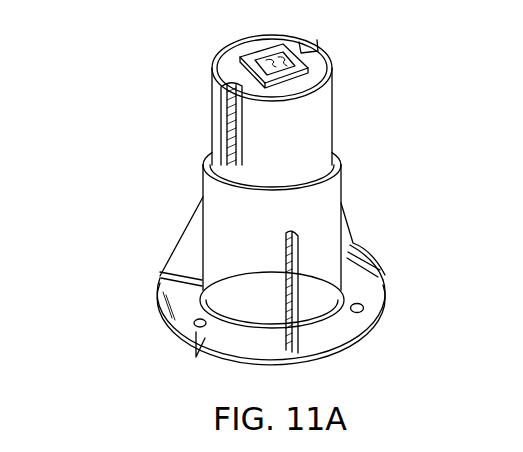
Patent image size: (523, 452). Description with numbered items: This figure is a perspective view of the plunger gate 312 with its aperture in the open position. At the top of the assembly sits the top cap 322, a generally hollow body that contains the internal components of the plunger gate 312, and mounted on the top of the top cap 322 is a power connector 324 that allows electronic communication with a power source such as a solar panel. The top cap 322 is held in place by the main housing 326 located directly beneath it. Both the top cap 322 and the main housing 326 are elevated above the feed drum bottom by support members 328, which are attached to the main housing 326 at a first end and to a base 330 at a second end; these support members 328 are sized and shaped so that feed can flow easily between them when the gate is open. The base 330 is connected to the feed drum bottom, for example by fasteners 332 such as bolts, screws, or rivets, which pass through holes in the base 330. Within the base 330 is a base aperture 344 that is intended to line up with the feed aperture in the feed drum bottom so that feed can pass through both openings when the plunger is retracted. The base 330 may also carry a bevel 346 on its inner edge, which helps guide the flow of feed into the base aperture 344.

The plunger gate 312 is at (170, 114).
The top cap 322 is at (332, 98).
The power connector 324 is at (307, 63).
The main housing 326 is at (340, 188).
The support members 328 is at (175, 248).
The base 330 is at (367, 333).
The fasteners 332 is at (365, 308).
The base aperture 344 is at (236, 310).
The bevel 346 is at (343, 290).